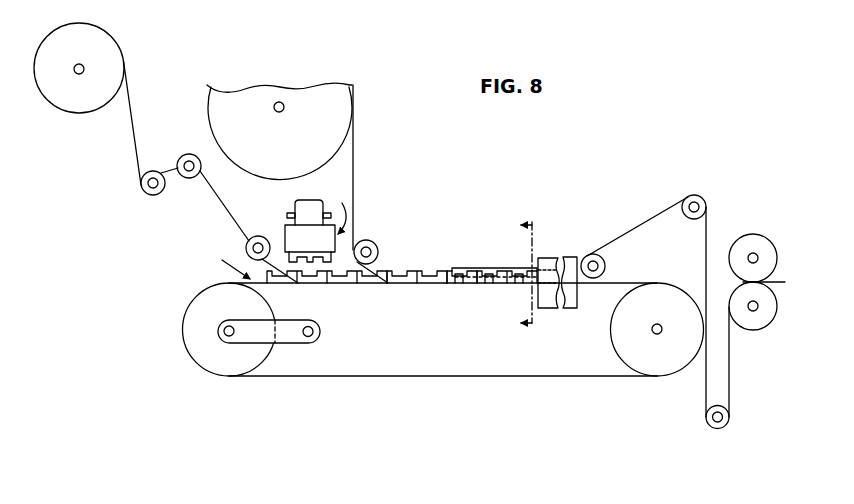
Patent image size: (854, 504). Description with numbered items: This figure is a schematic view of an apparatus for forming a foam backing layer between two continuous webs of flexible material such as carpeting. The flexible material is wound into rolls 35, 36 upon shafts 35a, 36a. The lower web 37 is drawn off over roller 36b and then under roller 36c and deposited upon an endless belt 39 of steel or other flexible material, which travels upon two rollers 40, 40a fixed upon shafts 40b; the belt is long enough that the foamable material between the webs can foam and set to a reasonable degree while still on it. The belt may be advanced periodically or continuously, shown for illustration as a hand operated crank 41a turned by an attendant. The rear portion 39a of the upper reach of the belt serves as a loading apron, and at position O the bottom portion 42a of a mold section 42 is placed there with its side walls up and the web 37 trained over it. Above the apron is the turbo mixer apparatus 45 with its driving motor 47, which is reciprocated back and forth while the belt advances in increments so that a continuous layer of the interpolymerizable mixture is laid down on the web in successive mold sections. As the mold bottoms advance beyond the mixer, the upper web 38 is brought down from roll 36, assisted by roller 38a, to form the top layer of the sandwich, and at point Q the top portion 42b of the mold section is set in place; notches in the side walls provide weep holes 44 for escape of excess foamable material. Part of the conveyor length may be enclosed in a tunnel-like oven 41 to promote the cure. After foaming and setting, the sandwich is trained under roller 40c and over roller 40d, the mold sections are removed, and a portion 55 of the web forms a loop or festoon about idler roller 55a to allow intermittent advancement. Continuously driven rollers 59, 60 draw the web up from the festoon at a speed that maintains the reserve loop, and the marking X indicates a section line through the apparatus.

The roll 35 is at (47, 37).
The shaft 35a is at (79, 64).
The roll 36 is at (343, 99).
The shaft 36a is at (285, 107).
The roller 36b is at (184, 178).
The roller 36c is at (252, 240).
The lower web 37 is at (140, 188).
The web 38 is at (354, 185).
The roller 38a is at (376, 243).
The endless belt 39 is at (433, 377).
The rear portion of the upper reach 39a is at (264, 288).
The roller 40 is at (208, 358).
The roller 40a is at (613, 338).
The shafts 40b is at (230, 326).
The roller 40c is at (599, 254).
The roller 40d is at (698, 195).
The tunnel-like oven 41 is at (559, 262).
The hand operated crank 41a is at (297, 338).
The mold sections 42 is at (457, 283).
The bottom portion 42a is at (423, 271).
The top portion 42b is at (502, 271).
The weep holes 44 is at (440, 271).
The turbo mixer apparatus 45 is at (342, 209).
The driving motor 47 is at (292, 210).
The loop or festoon 55 is at (729, 396).
The idler roller 55a is at (717, 429).
The continuously driven roller 59 is at (765, 325).
The continuously driven roller 60 is at (762, 243).
The position O is at (228, 260).
The point Q is at (462, 268).
The section line X- X is at (537, 273).